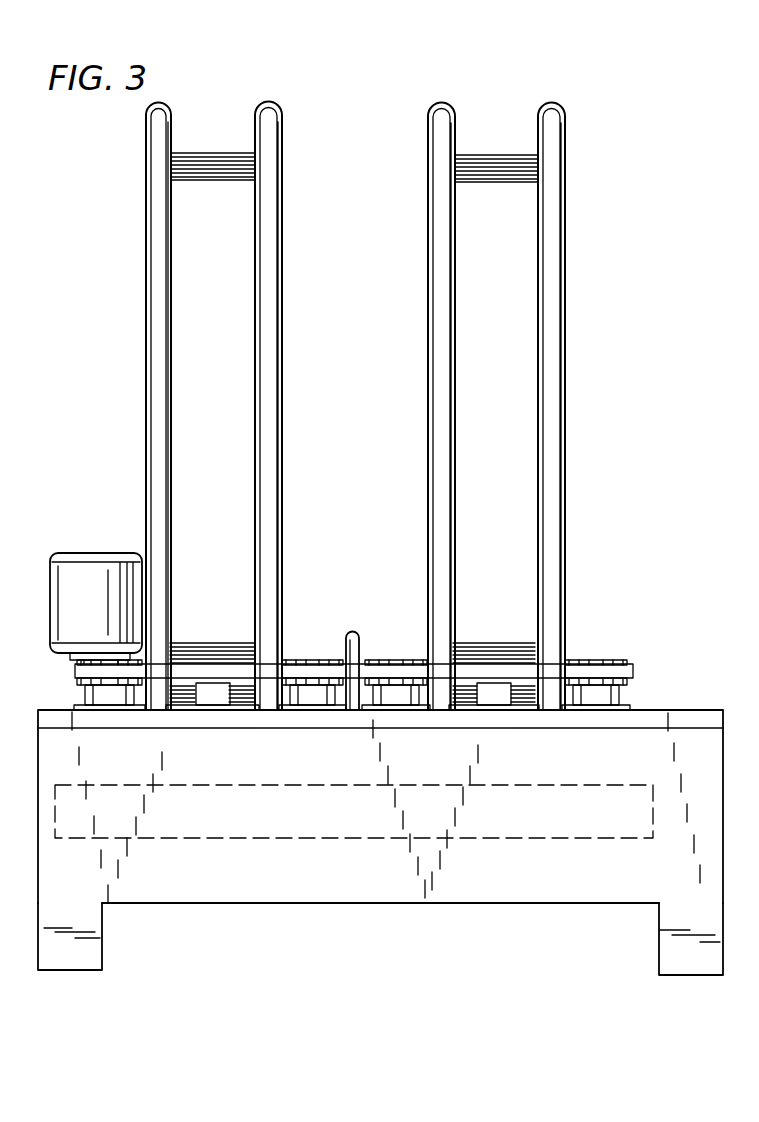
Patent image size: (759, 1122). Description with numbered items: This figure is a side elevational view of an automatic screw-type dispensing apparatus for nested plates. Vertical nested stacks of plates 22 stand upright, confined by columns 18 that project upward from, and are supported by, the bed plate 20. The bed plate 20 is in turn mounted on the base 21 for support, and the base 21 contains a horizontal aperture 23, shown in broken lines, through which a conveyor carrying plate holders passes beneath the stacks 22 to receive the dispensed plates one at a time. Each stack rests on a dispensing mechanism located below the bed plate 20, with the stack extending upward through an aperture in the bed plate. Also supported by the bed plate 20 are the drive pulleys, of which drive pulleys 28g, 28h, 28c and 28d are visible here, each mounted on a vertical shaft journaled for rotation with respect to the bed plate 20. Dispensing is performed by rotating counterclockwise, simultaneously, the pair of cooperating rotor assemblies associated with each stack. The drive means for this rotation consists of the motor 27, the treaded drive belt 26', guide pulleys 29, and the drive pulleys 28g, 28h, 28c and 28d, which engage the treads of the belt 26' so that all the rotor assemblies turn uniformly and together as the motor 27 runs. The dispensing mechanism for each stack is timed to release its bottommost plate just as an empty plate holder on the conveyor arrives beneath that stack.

The columns 18 is at (566, 186).
The nested stacks of plates 22 is at (501, 291).
The motor 27 is at (82, 557).
The treaded drive belt 26' is at (385, 674).
The drive pulley 28g is at (78, 680).
The drive pulley 28h is at (310, 659).
The drive pulley 28c is at (393, 659).
The drive pulley 28d is at (610, 662).
The guide pulleys 29 is at (210, 661).
The bed plate 20 is at (712, 711).
The base 21 is at (723, 776).
The horizontal aperture 23 is at (604, 838).